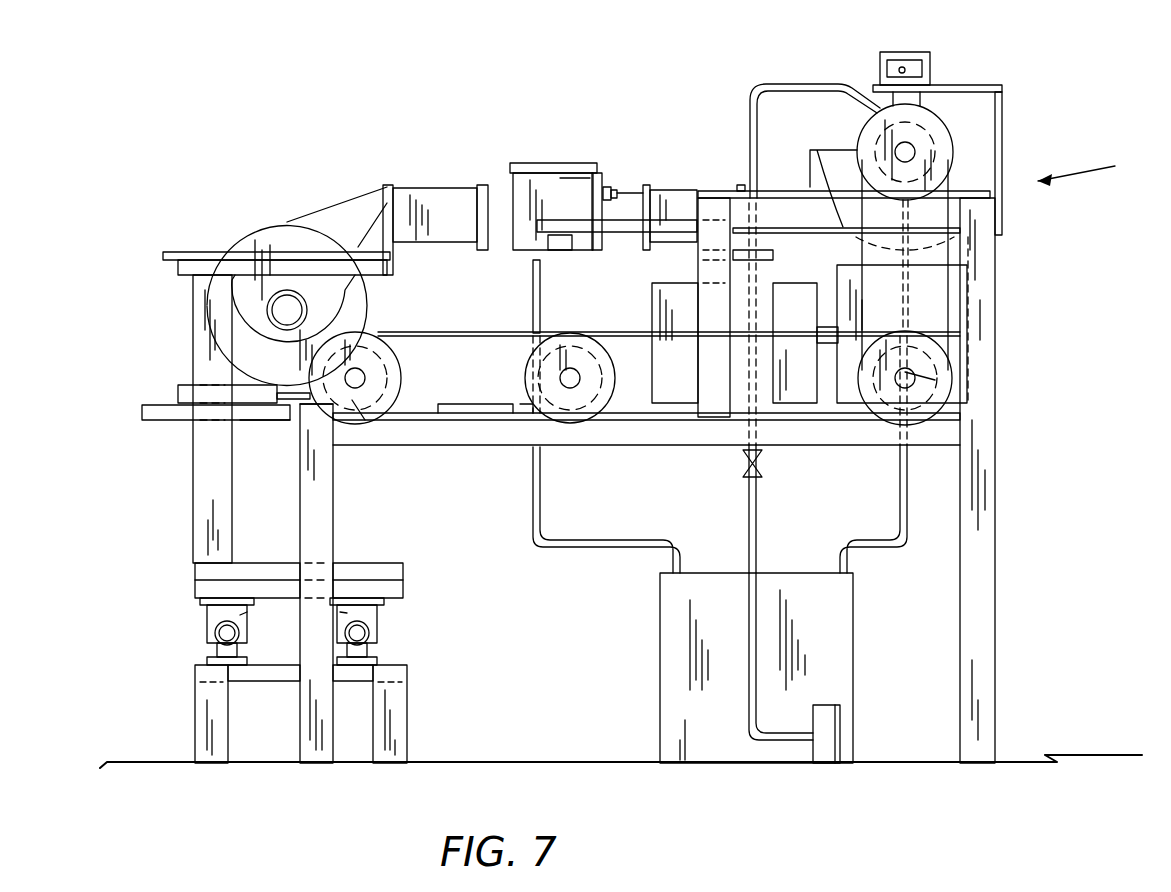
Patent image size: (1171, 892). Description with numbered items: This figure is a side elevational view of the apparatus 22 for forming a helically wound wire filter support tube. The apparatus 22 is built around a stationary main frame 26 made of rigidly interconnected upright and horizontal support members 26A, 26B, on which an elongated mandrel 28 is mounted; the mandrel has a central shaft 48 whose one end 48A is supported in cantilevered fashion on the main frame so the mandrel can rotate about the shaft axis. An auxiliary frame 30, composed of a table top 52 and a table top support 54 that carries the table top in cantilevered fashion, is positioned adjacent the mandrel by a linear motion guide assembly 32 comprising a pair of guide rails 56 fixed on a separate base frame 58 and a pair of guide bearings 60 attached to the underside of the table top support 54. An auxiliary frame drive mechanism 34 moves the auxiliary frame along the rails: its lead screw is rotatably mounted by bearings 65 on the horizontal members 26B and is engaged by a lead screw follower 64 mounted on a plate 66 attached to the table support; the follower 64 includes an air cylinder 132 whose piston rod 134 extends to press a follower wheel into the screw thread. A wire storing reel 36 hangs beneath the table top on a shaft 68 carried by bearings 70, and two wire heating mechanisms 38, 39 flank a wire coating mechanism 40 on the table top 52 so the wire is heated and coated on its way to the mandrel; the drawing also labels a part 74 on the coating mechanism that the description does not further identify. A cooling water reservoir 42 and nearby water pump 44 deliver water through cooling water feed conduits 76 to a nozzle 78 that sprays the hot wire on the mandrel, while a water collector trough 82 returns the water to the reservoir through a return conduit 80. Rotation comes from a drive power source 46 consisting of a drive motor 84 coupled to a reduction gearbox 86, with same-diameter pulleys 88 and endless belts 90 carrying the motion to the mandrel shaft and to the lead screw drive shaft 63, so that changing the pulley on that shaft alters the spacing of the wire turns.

The apparatus 22 is at (1091, 166).
The stationary main frame 26 is at (190, 498).
The upright support member 26A is at (707, 268).
The horizontal support member 26B is at (790, 212).
The mandrel 28 is at (868, 115).
The auxiliary frame 30 is at (175, 252).
The linear motion guide assembly 32 is at (305, 620).
The auxiliary frame drive mechanism 34 is at (407, 358).
The wire storing reel 36 is at (237, 334).
The wire heating mechanism 38 is at (422, 184).
The wire heating mechanism 39 is at (667, 182).
The wire coating mechanism 40 is at (534, 160).
The cooling water reservoir 42 is at (660, 672).
The water pump 44 is at (830, 718).
The drive power source 46 is at (977, 321).
The central shaft 48 is at (915, 148).
The one end of central shaft 48A is at (915, 157).
The table top 52 is at (363, 248).
The table top support 54 is at (235, 498).
The guide rails 56 is at (212, 634).
The base frame 58 is at (420, 664).
The guide bearings 60 is at (347, 613).
The lead screw drive shaft 63 is at (353, 390).
The lead screw follower 64 is at (250, 420).
The bearings 65 is at (400, 379).
The plate 66 is at (150, 415).
The shaft 68 is at (280, 296).
The bearings 70 is at (237, 255).
The motor housing 74 is at (580, 185).
The cooling water feed conduits 76 is at (795, 84).
The nozzle 78 is at (880, 92).
The return conduit 80 is at (907, 505).
The water collector trough 82 is at (913, 253).
The drive motor 84 is at (668, 300).
The reduction gearbox 86 is at (953, 344).
The pulleys 88 is at (530, 378).
The endless belts 90 is at (420, 333).
The air cylinder 132 is at (178, 390).
The piston rod 134 is at (290, 402).